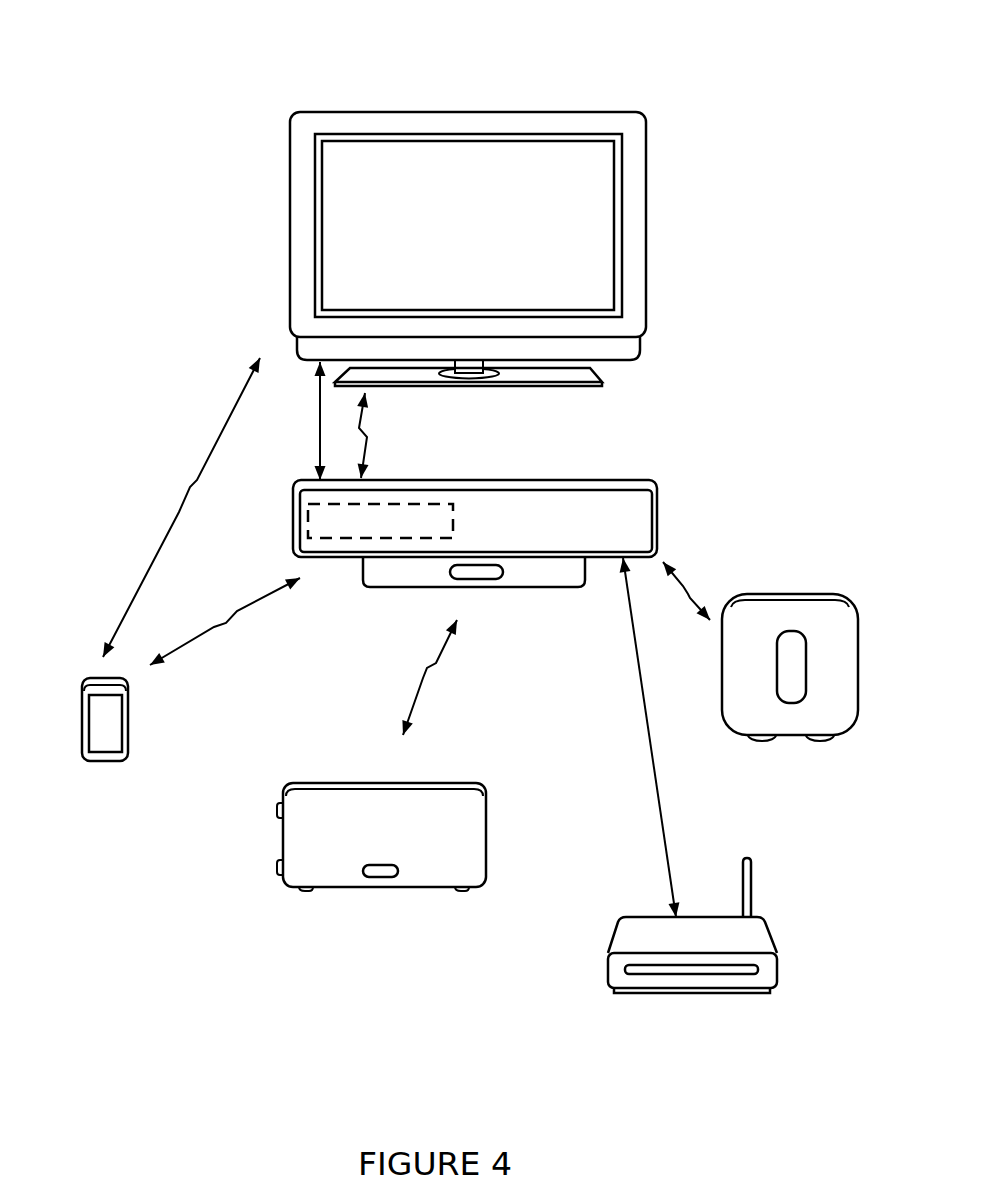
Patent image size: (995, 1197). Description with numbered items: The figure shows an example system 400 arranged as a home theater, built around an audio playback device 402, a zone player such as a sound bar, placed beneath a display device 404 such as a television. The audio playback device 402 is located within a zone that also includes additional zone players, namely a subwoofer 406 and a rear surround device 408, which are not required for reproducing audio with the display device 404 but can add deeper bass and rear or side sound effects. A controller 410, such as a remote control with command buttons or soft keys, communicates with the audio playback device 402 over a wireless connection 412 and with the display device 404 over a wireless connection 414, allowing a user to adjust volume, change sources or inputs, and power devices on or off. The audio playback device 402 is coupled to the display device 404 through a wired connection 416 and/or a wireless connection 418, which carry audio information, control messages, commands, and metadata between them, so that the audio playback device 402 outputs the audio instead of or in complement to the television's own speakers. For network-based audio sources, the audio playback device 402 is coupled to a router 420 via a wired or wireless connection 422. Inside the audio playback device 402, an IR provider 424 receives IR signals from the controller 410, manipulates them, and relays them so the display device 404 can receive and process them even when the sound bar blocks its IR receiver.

The system 400 is at (136, 69).
The audio playback device 402 is at (652, 484).
The display device 404 is at (290, 147).
The subwoofer 406 is at (806, 593).
The rear surround device 408 is at (347, 783).
The controller 410 is at (85, 688).
The wireless connection 412 is at (264, 663).
The wireless connection 414 is at (136, 545).
The wired connection 416 is at (301, 425).
The wireless connection 418 is at (419, 445).
The router 420 is at (608, 956).
The wired or wireless connection 422 is at (660, 791).
The IR provider 424 is at (440, 503).